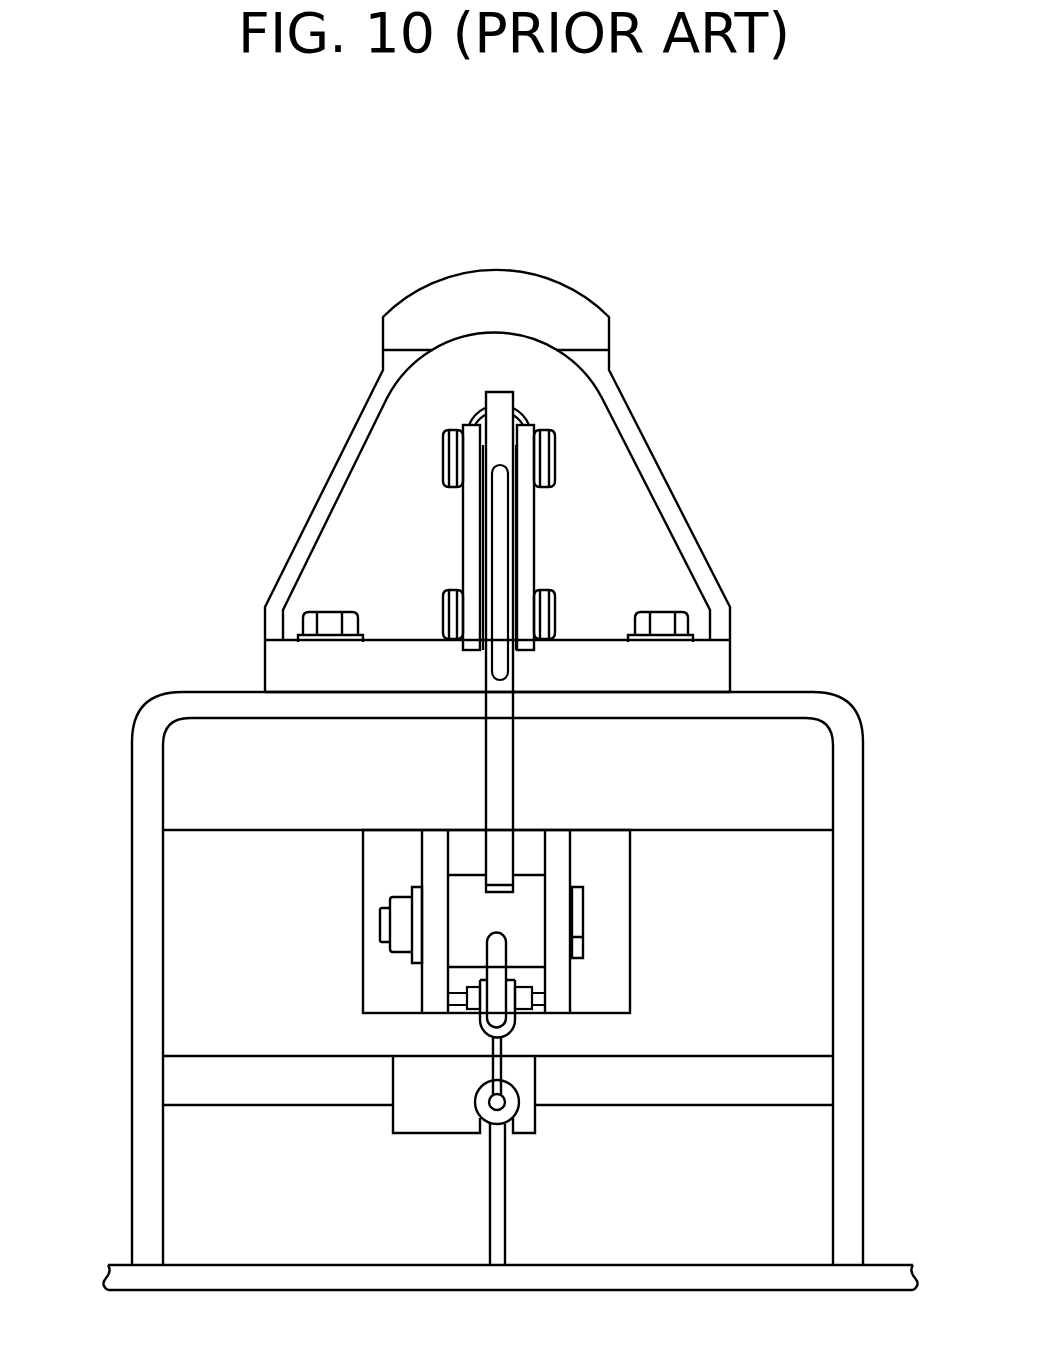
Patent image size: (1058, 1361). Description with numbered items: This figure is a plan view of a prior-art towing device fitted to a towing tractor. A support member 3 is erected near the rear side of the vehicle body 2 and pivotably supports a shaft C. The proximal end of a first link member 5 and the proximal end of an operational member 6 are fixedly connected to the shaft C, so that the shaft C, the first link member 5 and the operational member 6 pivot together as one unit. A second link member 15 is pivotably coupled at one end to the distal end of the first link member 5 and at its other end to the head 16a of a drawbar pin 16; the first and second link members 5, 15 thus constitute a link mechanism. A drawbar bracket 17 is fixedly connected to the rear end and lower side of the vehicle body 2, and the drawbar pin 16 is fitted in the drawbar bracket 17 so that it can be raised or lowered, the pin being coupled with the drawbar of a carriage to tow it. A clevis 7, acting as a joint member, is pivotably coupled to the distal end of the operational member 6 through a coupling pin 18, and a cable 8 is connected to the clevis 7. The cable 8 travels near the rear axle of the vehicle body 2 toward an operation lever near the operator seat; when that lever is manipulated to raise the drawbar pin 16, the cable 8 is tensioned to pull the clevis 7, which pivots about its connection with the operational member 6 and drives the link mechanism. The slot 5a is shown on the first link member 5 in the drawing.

The vehicle body 2 is at (148, 912).
The support member 3 is at (438, 855).
The shaft C is at (527, 917).
The first link member 5 is at (497, 778).
The slot 5a is at (502, 677).
The operational member 6 is at (493, 958).
The clevis 7 is at (508, 1020).
The cable 8 is at (502, 1073).
The second link member 15 is at (467, 505).
The drawbar pin 16 is at (490, 393).
The head 16a is at (513, 407).
The drawbar bracket 17 is at (583, 473).
The coupling pin 18 is at (463, 992).